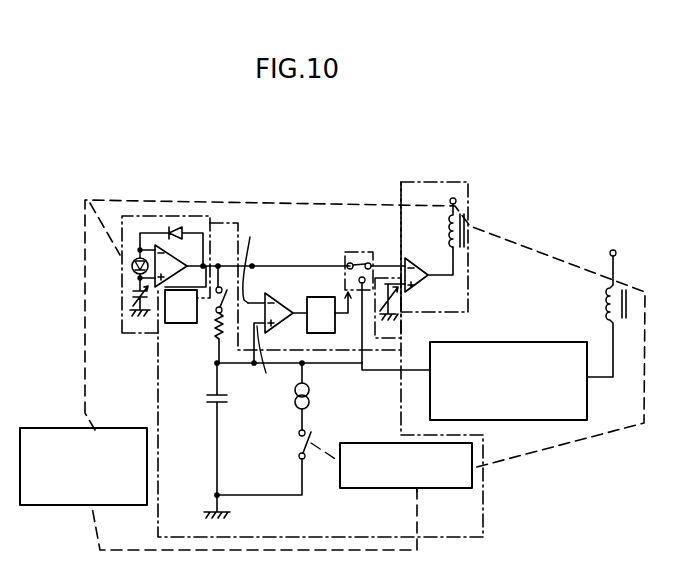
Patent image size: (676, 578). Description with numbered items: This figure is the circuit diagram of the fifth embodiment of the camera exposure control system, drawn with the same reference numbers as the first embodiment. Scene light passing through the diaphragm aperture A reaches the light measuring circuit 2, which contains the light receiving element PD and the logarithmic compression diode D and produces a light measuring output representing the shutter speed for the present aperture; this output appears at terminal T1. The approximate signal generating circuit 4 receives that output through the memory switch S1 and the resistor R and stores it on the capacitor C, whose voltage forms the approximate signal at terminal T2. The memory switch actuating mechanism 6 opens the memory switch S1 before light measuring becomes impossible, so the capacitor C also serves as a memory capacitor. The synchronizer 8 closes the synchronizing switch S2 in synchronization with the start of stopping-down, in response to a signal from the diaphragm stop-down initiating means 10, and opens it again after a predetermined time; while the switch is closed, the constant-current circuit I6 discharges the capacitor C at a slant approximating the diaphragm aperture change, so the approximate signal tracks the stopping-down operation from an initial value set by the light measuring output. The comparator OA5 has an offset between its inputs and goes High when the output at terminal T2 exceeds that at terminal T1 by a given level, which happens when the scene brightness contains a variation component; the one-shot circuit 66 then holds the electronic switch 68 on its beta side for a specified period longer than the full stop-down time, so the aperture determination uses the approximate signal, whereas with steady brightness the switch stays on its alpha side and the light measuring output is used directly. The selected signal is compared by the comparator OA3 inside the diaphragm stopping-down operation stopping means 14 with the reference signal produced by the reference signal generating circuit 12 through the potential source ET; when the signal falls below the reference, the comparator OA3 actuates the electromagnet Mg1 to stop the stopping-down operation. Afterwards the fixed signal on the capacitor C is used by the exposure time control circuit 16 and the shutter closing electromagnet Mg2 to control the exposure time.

The diaphragm aperture A is at (115, 279).
The light measuring circuit 2 is at (122, 334).
The light receiving element PD is at (137, 257).
The logarithmic compression diode D is at (178, 226).
The memory switch actuating mechanism 6 is at (195, 318).
The memory switch S1 is at (214, 318).
The resistor R is at (214, 345).
The capacitor C is at (221, 401).
The terminal T1 is at (252, 257).
The terminal T2 is at (264, 362).
The comparator OA5 is at (277, 316).
The one-shot circuit 66 is at (316, 297).
The electronic switch 68 is at (370, 252).
The reference signal generating circuit 12 is at (408, 330).
The potential source ET is at (400, 307).
The diaphragm stopping-down operation stopping means 14 is at (440, 182).
The comparator OA3 is at (427, 243).
The electromagnet Mg1 is at (470, 226).
The shutter closing electromagnet Mg2 is at (608, 306).
The exposure time control circuit 16 is at (588, 386).
The constant-current circuit I6 is at (316, 385).
The synchronizing switch S2 is at (278, 461).
The synchronizer 8 is at (395, 443).
The approximate signal generating circuit 4 is at (484, 492).
The diaphragm stop-down initiating means 10 is at (77, 507).